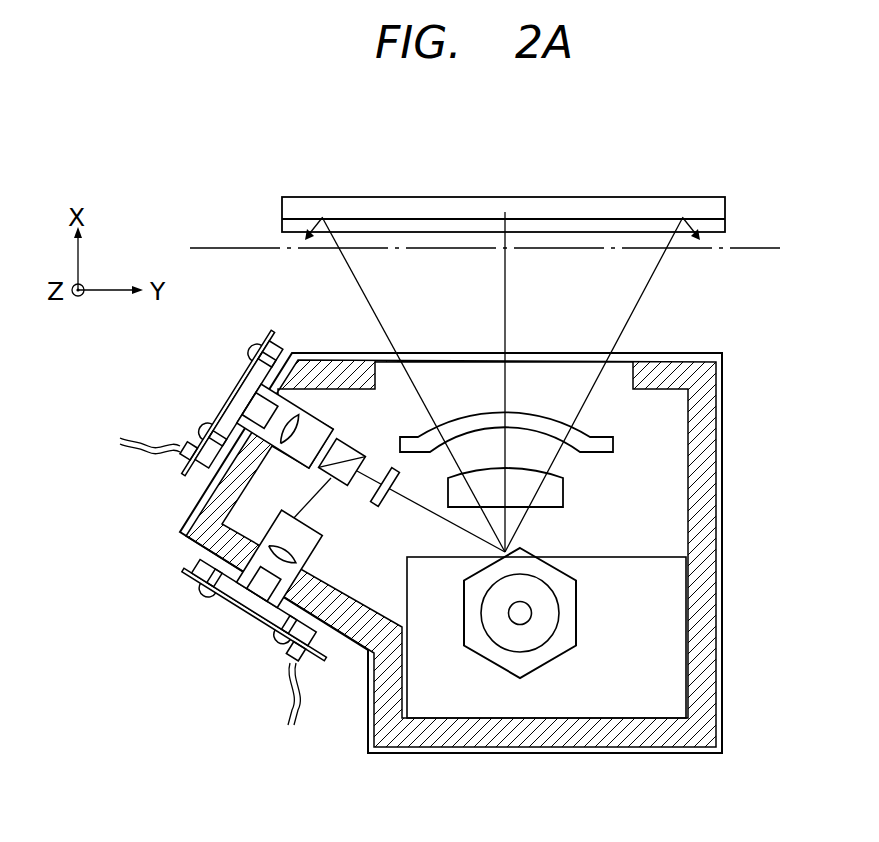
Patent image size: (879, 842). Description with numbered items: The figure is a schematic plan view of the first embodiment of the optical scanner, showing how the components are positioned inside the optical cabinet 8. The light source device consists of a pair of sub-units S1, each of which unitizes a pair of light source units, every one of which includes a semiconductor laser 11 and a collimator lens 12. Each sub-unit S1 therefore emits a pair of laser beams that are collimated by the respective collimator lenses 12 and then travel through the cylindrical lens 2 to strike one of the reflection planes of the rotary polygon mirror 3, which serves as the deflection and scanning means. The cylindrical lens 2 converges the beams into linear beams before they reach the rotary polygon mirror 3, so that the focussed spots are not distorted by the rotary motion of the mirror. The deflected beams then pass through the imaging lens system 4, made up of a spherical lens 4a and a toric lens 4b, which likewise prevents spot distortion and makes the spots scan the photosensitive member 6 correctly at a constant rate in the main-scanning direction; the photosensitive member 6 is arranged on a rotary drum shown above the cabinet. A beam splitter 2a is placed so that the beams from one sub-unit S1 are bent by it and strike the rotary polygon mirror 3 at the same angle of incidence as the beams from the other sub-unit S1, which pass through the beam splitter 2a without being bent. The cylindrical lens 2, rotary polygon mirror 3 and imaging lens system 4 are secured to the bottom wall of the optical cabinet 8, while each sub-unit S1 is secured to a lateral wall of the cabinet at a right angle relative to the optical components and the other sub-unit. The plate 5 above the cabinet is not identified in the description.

The cylindrical lens 2 is at (376, 503).
The beam splitter 2a is at (320, 471).
The rotary polygon mirror 3 is at (555, 648).
The imaging lens system 4 is at (615, 464).
The spherical lens 4a is at (618, 491).
The toric lens 4b is at (690, 445).
The object plate 5 is at (620, 197).
The photosensitive member 6 is at (213, 247).
The optical cabinet 8 is at (723, 689).
The semiconductor laser 11 is at (241, 407).
The collimator lens 12 is at (242, 382).
The sub-unit S1 is at (241, 735).